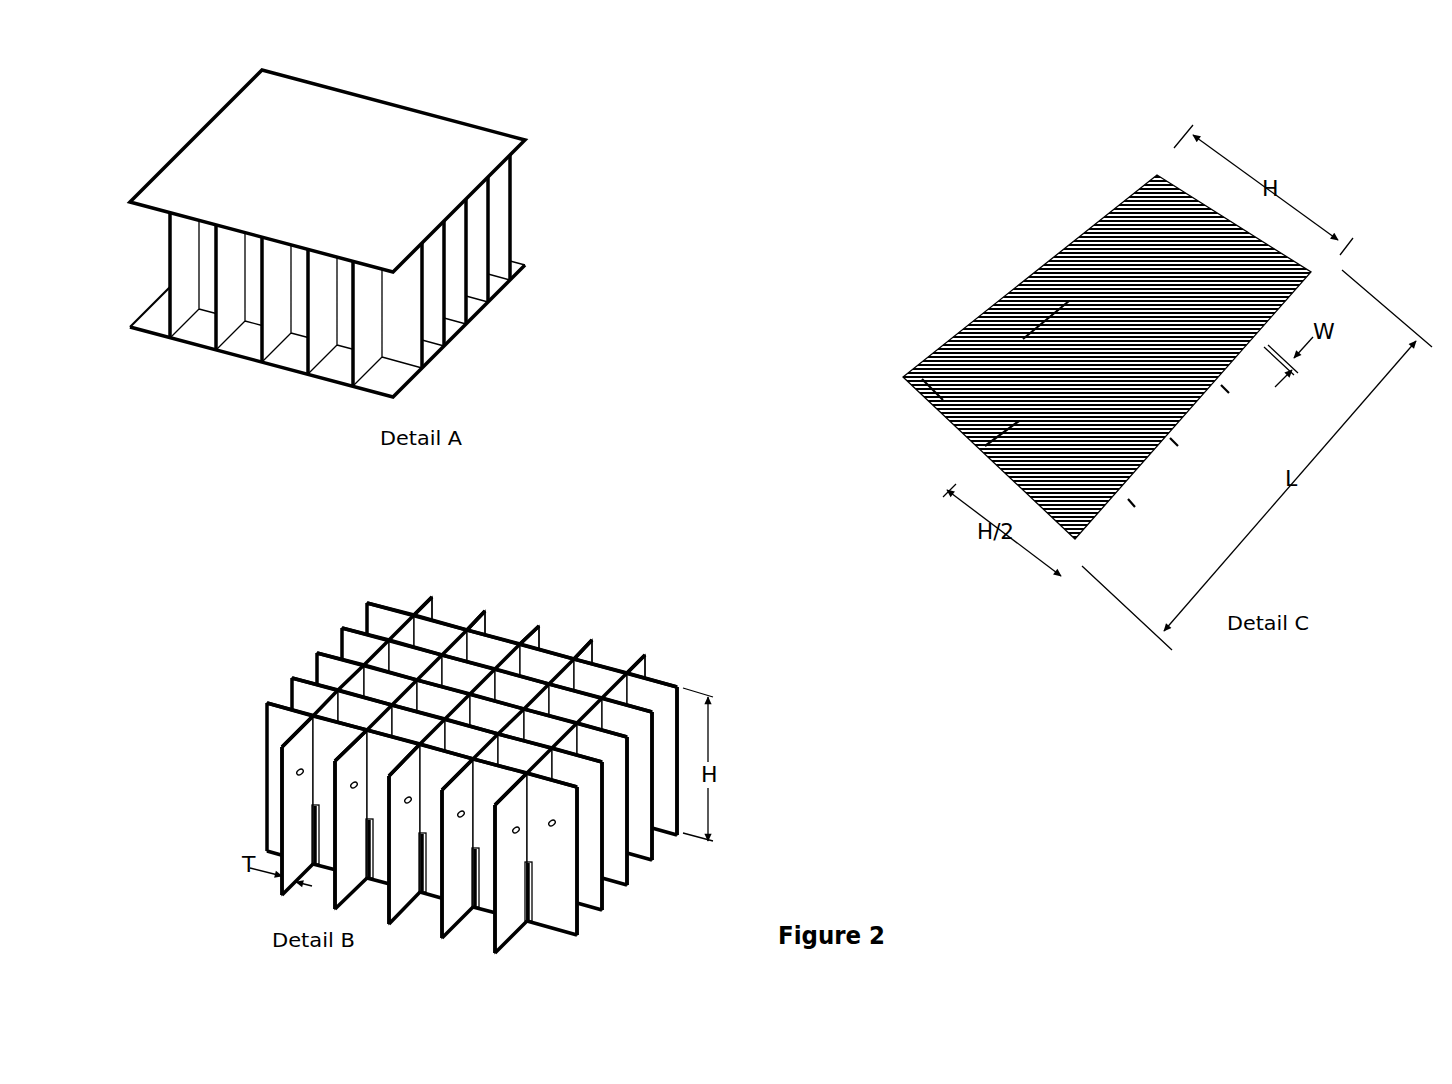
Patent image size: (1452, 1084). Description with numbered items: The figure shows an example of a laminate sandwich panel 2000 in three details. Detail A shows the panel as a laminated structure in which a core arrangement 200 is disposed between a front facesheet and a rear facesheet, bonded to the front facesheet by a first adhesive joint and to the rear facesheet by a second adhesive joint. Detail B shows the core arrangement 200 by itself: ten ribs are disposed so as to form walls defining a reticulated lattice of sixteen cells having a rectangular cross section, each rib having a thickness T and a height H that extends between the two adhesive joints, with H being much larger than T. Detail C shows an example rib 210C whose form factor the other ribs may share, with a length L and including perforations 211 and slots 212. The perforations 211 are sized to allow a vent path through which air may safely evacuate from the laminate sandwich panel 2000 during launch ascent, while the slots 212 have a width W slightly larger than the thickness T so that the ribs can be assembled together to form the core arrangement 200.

The laminate sandwich panel 2000 is at (316, 320).
The core arrangement 200 is at (165, 273).
The perforations 211 is at (520, 833).
The slots 212 is at (1225, 389).
The example rib 210C is at (1086, 217).